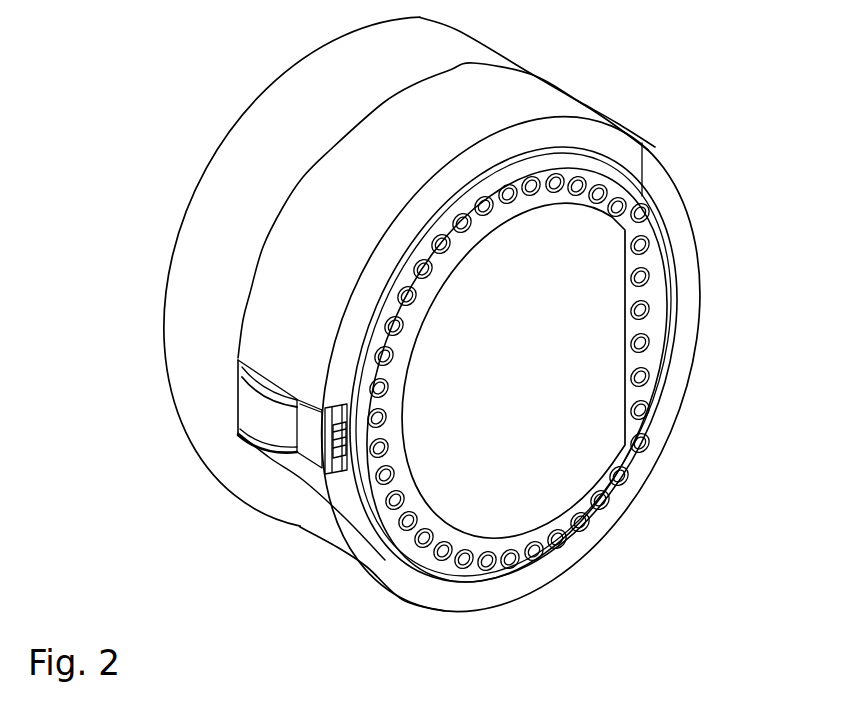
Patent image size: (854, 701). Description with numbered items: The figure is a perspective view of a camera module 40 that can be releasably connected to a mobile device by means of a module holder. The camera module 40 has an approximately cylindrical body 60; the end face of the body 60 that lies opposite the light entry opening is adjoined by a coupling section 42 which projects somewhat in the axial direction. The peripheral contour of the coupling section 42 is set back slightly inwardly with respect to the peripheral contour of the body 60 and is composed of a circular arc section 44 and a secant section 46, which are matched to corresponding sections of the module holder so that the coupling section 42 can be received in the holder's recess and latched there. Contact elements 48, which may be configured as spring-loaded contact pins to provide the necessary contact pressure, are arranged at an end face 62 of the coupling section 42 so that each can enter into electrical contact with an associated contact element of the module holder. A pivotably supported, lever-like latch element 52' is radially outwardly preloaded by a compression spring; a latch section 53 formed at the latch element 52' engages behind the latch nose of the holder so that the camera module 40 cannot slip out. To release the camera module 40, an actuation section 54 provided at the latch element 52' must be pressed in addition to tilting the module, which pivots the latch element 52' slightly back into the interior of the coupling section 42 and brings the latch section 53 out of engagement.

The camera module 40 is at (676, 467).
The coupling section 42 is at (474, 466).
The circular arc section 44 is at (378, 339).
The secant section 46 is at (672, 313).
The contact elements 48 is at (618, 200).
The latch element 52' is at (269, 502).
The latch section 53 is at (307, 440).
The actuation section 54 is at (267, 430).
The cylindrical body 60 is at (317, 217).
The end face 62 is at (510, 377).